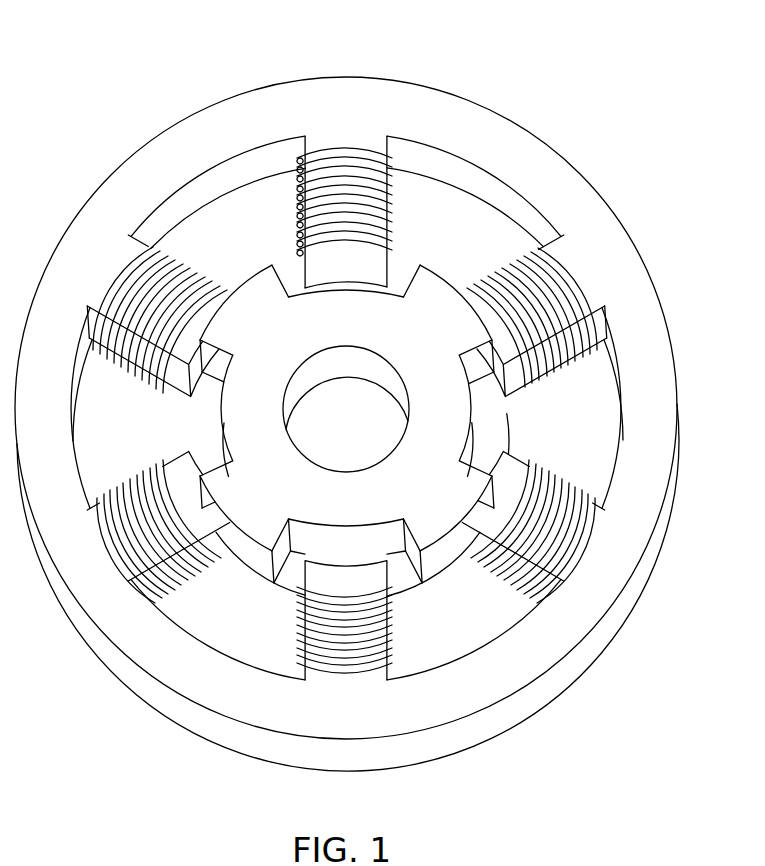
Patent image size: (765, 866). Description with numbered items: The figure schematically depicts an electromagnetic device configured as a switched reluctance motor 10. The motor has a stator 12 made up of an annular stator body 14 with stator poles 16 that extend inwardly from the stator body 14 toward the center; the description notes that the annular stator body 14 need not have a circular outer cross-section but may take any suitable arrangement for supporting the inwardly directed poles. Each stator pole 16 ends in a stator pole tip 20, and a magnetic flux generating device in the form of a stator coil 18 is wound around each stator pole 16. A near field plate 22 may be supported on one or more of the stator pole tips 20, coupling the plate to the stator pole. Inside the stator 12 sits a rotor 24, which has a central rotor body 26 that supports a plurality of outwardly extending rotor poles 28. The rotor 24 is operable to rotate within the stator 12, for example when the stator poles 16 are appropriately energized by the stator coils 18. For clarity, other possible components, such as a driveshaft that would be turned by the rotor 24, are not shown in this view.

The switched reluctance motor 10 is at (108, 95).
The stator 12 is at (650, 312).
The annular stator body 14 is at (512, 143).
The stator pole 16 is at (346, 158).
The stator coil 18 is at (293, 201).
The stator pole tip 20 is at (494, 462).
The near field plate 22 is at (312, 272).
The rotor 24 is at (326, 376).
The central rotor body 26 is at (364, 334).
The rotor pole 28 is at (441, 292).